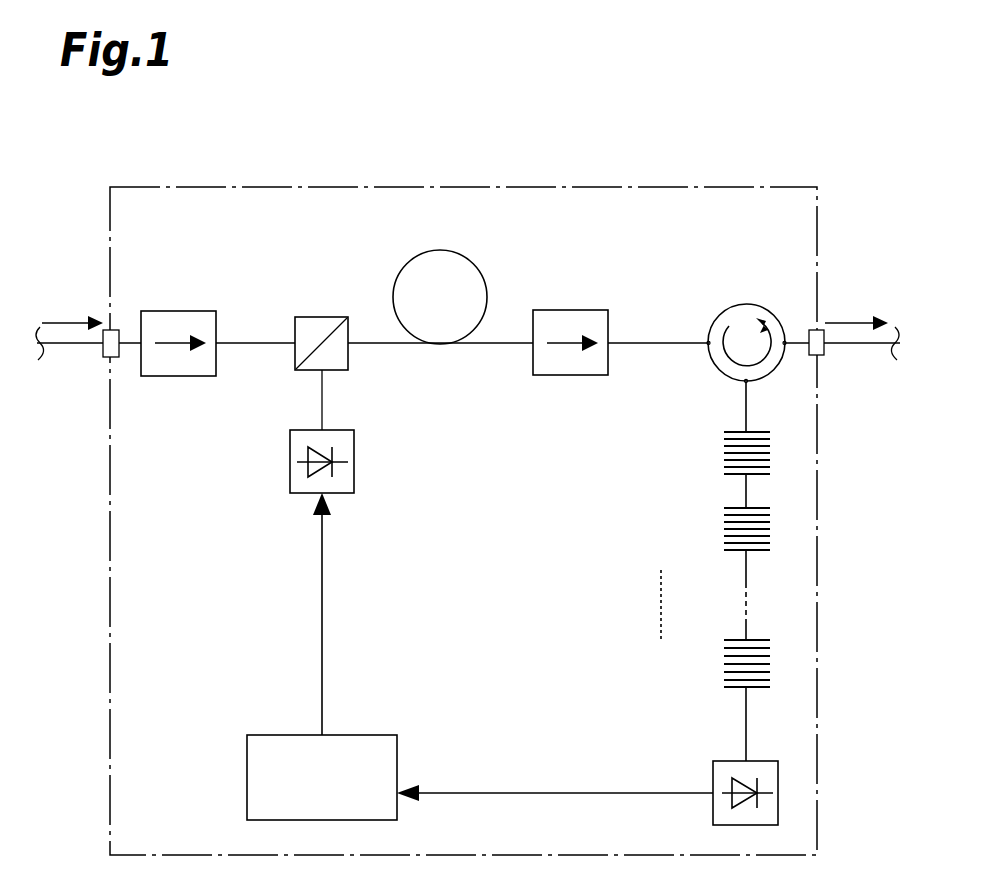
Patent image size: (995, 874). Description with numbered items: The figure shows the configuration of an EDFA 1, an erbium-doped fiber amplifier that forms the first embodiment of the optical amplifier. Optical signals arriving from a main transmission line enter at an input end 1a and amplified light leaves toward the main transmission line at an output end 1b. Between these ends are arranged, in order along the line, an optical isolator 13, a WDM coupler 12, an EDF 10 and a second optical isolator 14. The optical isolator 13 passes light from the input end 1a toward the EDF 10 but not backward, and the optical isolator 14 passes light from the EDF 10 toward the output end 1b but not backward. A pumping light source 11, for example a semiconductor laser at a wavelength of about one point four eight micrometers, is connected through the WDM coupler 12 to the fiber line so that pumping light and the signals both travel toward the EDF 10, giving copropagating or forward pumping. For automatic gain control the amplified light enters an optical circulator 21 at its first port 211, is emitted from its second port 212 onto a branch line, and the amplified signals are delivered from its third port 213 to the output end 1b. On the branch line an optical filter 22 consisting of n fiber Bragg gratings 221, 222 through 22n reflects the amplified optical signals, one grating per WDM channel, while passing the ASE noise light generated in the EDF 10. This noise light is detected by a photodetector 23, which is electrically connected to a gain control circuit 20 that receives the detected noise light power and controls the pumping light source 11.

The EDFA 1 is at (820, 251).
The input end 1a is at (101, 351).
The output end 1b is at (826, 352).
The EDF 10 is at (481, 268).
The pumping light source 11 is at (355, 465).
The WDM coupler 12 is at (317, 317).
The optical isolator 13 is at (173, 311).
The optical isolator 14 is at (569, 310).
The gain control circuit 20 is at (362, 735).
The optical circulator 21 is at (734, 304).
The first port 211 is at (708, 340).
The second port 212 is at (745, 382).
The third port 213 is at (787, 348).
The optical filter 22 is at (678, 560).
The fiber Bragg grating 221 is at (726, 452).
The fiber Bragg grating 222 is at (726, 530).
The fiber Bragg grating 22n is at (704, 664).
The photodetector 23 is at (713, 772).